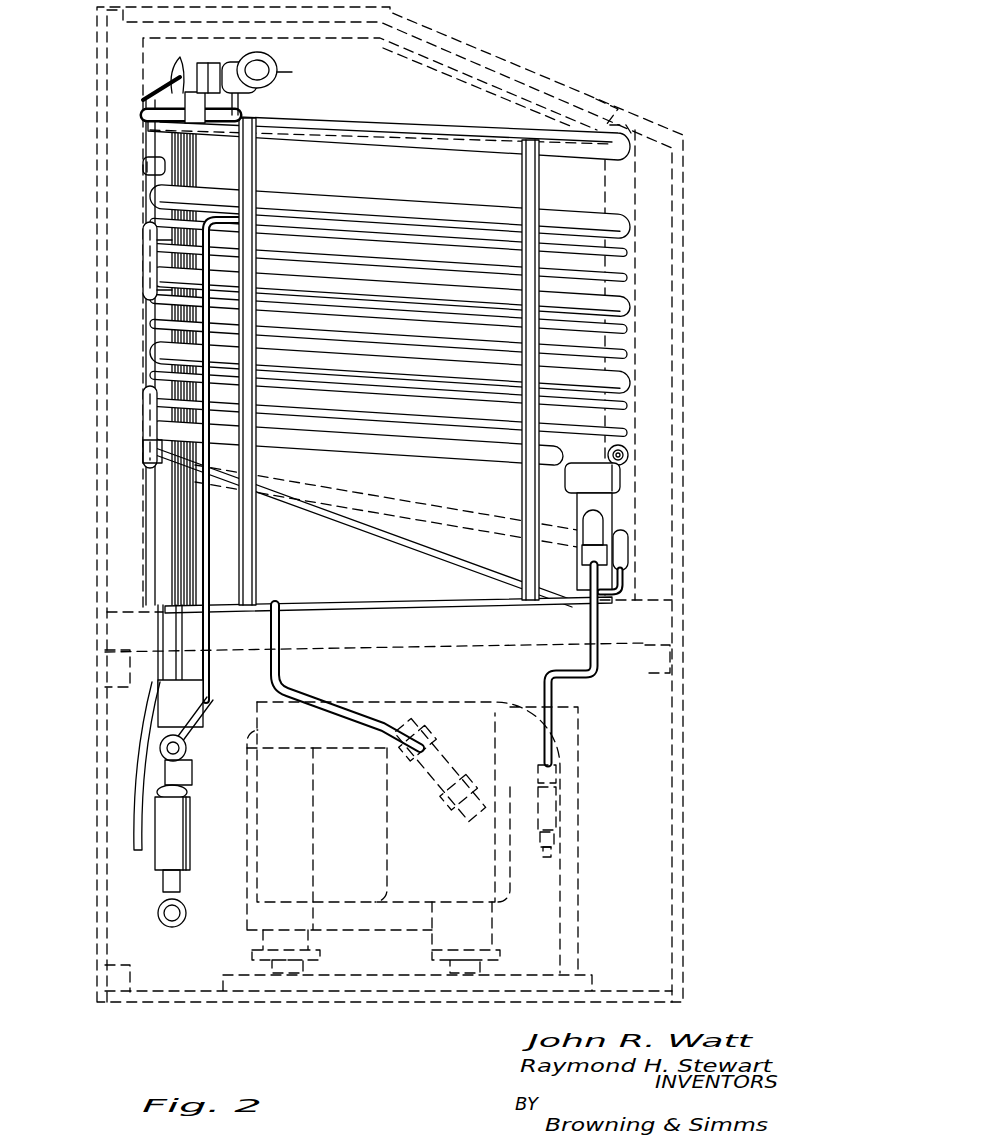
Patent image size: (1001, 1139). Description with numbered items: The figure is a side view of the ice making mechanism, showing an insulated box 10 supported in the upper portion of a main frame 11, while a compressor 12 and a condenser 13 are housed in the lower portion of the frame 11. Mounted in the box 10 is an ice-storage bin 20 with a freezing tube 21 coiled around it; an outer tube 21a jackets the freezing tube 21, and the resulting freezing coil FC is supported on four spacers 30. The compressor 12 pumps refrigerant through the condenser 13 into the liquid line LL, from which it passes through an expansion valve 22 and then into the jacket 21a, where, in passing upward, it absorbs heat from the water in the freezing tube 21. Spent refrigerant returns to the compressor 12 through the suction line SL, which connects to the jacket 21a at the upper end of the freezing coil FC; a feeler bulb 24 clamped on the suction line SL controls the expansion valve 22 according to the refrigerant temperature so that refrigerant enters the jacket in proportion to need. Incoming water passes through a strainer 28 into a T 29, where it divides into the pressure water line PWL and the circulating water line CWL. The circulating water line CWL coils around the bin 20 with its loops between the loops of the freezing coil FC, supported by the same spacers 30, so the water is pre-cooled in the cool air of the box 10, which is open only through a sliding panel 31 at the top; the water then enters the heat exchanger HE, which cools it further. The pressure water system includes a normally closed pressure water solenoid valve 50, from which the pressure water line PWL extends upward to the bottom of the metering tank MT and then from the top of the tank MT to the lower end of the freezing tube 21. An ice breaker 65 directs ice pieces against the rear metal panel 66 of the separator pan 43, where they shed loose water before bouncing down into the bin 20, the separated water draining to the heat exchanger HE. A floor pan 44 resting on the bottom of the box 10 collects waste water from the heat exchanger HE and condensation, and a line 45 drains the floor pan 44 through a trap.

The insulated box 10 is at (120, 283).
The main frame 11 is at (97, 722).
The compressor 12 is at (500, 925).
The condenser 13 is at (478, 702).
The ice-storage bin 20 is at (608, 197).
The freezing tube 21 is at (630, 458).
The outer tube (jacket) 21a is at (630, 455).
The expansion valve 22 is at (620, 500).
The feeler bulb 24 is at (275, 85).
The strainer 28 is at (178, 832).
The T 29 is at (188, 776).
The spacers 30 is at (256, 163).
The sliding panel 31 is at (590, 102).
The separator pan 43 is at (147, 170).
The floor pan 44 is at (308, 600).
The line (drain line) 45 is at (140, 772).
The pressure water solenoid valve 50 is at (207, 722).
The ice breaker 65 is at (147, 118).
The rear metal panel 66 is at (143, 100).
The suction line SL is at (283, 75).
The freezing coil FC is at (358, 197).
The circulating water line CWL is at (432, 246).
The heat exchanger HE is at (145, 240).
The metering tank MT is at (148, 338).
The pressure water line PWL is at (185, 637).
The liquid line LL is at (580, 676).